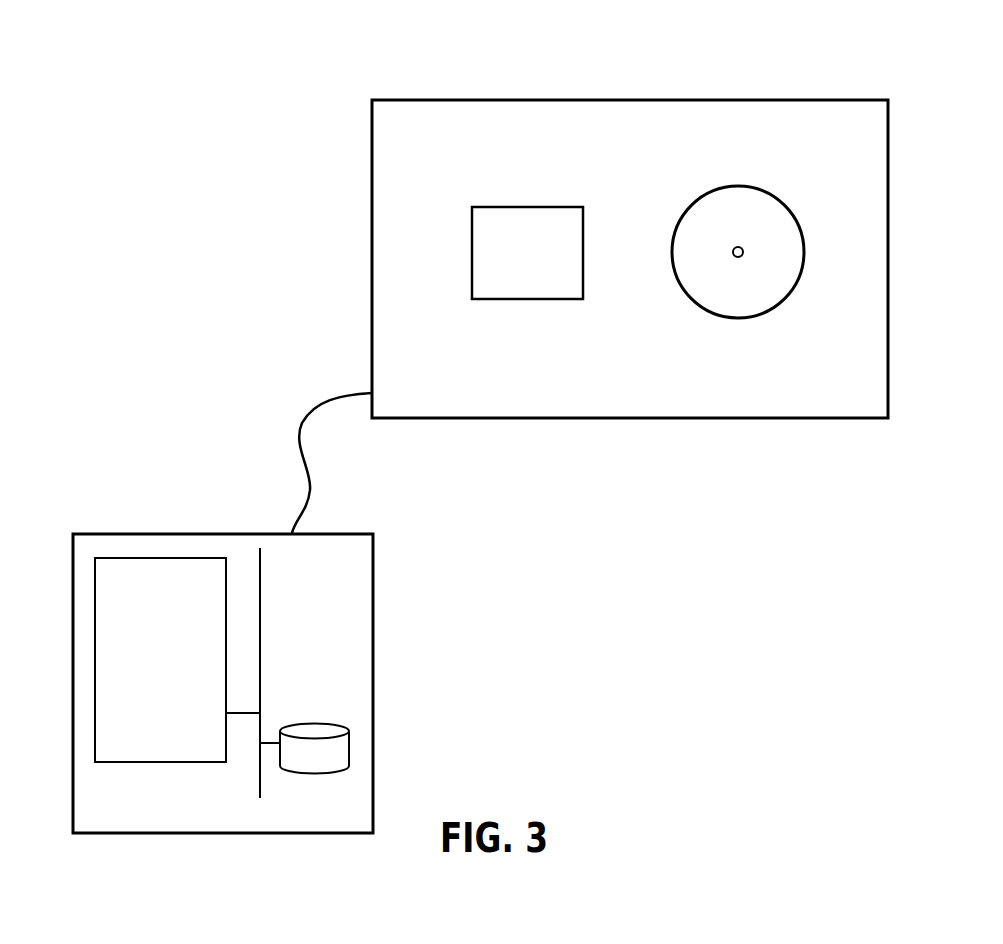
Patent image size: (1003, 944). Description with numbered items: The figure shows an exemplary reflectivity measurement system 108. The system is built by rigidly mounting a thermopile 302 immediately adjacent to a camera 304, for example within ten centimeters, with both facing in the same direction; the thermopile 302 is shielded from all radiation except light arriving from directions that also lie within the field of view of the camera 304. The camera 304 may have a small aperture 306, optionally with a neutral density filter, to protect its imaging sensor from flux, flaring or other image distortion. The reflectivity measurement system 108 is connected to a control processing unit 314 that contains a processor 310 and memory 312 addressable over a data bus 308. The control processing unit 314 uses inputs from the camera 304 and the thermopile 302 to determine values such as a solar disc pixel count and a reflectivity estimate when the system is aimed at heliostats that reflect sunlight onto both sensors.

The reflectivity measurement system 108 is at (383, 183).
The thermopile 302 is at (524, 221).
The camera 304 is at (707, 222).
The small aperture 306 is at (743, 251).
The data bus 308 is at (258, 566).
The processor 310 is at (185, 668).
The memory 312 is at (336, 769).
The control processing unit 314 is at (190, 818).